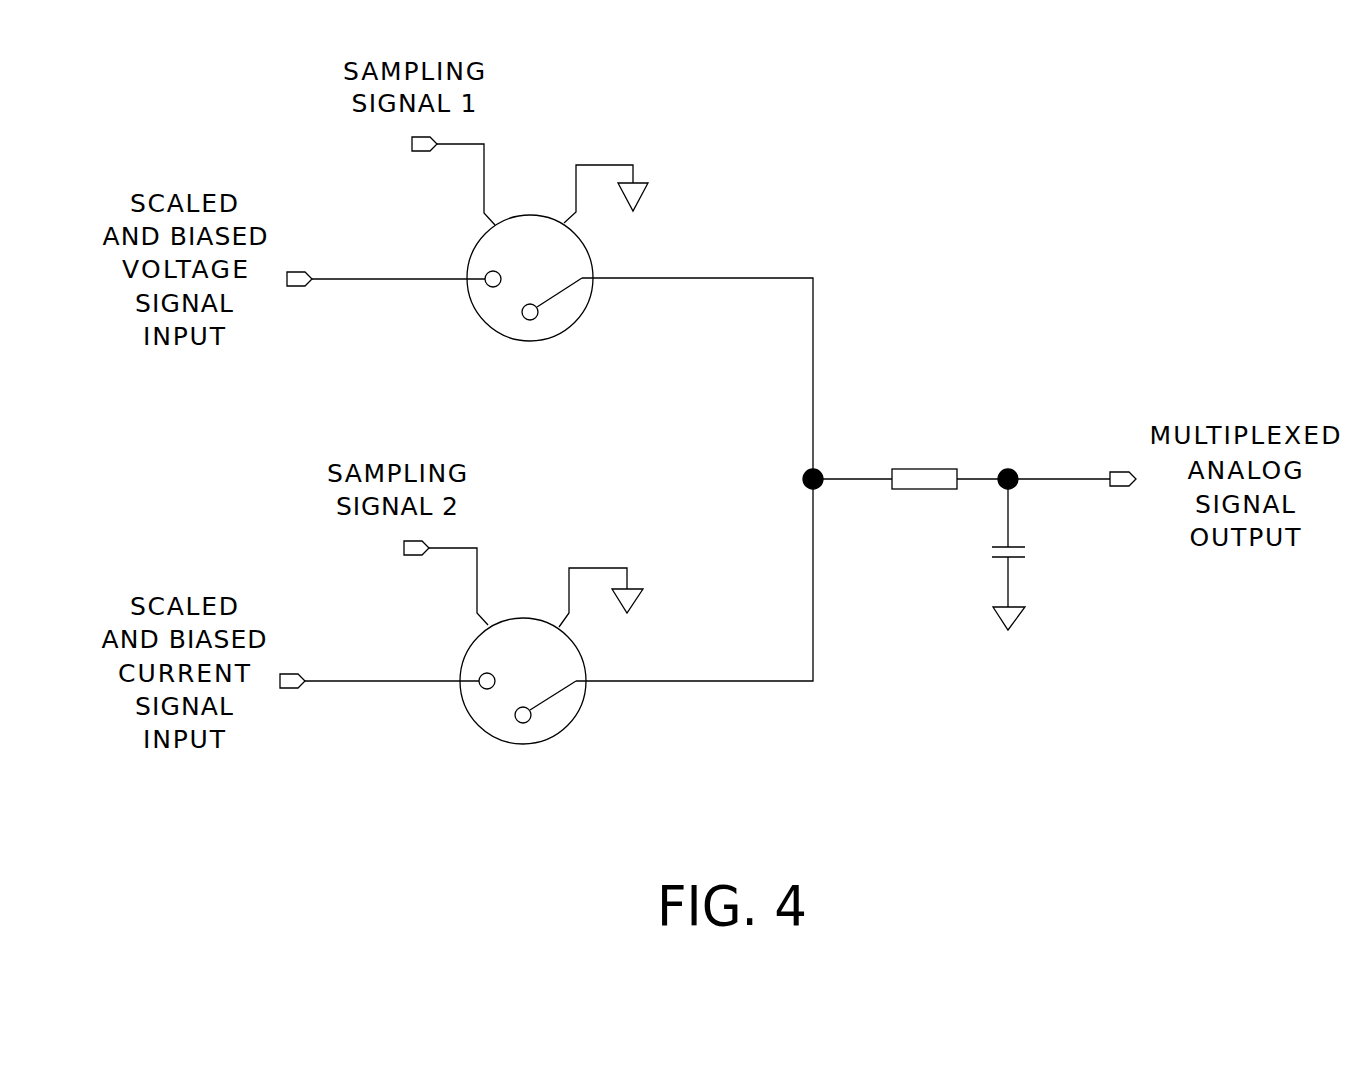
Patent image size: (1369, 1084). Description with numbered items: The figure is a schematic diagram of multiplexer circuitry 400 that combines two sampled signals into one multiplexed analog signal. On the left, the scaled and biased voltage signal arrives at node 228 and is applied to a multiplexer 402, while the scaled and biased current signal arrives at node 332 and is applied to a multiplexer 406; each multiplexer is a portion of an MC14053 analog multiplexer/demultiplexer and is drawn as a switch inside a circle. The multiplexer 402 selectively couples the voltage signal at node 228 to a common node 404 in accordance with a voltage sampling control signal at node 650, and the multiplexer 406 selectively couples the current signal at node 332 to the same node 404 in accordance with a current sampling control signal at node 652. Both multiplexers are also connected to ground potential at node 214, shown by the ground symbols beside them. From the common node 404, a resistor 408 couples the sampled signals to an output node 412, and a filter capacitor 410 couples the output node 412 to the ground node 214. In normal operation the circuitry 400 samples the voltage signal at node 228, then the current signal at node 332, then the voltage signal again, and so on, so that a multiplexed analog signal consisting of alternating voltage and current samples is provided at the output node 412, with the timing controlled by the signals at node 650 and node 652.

The multiplexer circuitry 400 is at (990, 76).
The voltage sampling control signal node 650 is at (426, 154).
The current sampling control signal node 652 is at (417, 558).
The scaled and biased voltage signal node 228 is at (295, 287).
The scaled and biased current signal node 332 is at (287, 690).
The multiplexer 402 is at (563, 332).
The multiplexer 406 is at (572, 720).
The ground node 214 is at (647, 195).
The node 404 is at (803, 477).
The resistor 408 is at (947, 467).
The filter capacitor 410 is at (997, 560).
The output node 412 is at (1122, 490).